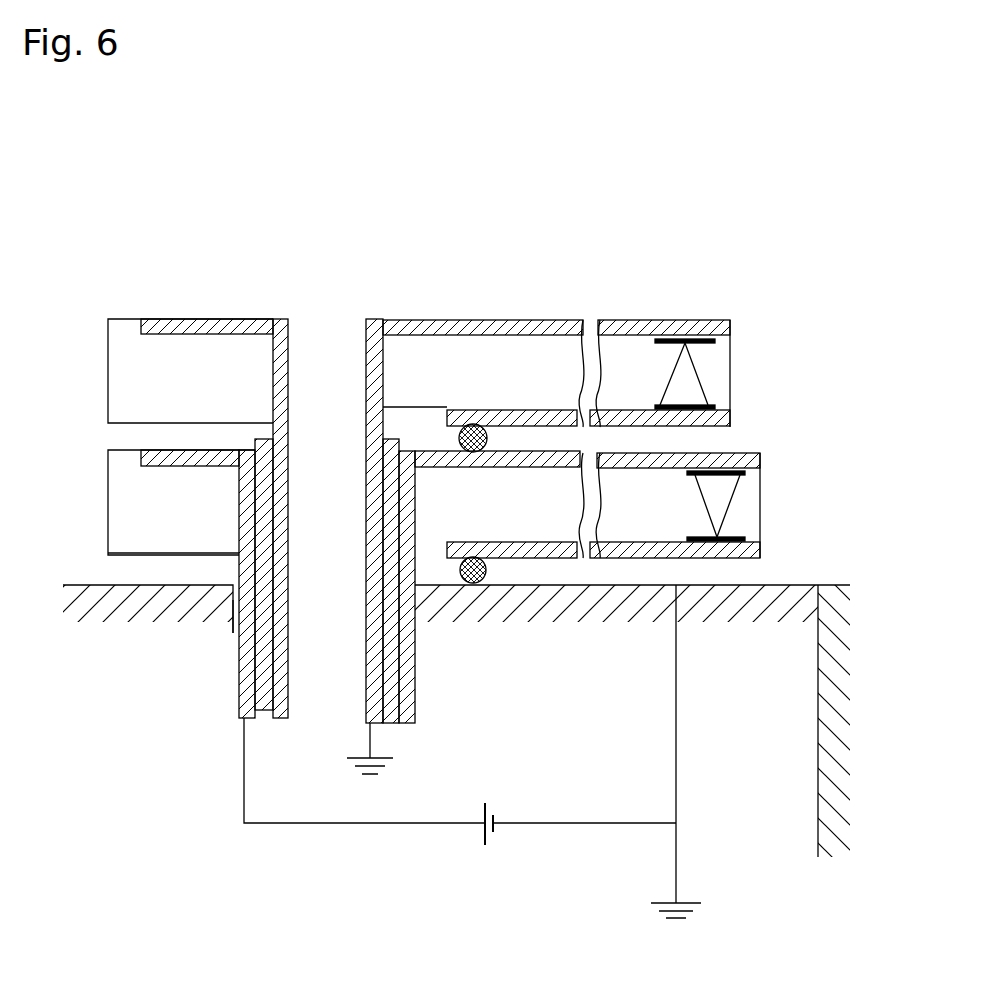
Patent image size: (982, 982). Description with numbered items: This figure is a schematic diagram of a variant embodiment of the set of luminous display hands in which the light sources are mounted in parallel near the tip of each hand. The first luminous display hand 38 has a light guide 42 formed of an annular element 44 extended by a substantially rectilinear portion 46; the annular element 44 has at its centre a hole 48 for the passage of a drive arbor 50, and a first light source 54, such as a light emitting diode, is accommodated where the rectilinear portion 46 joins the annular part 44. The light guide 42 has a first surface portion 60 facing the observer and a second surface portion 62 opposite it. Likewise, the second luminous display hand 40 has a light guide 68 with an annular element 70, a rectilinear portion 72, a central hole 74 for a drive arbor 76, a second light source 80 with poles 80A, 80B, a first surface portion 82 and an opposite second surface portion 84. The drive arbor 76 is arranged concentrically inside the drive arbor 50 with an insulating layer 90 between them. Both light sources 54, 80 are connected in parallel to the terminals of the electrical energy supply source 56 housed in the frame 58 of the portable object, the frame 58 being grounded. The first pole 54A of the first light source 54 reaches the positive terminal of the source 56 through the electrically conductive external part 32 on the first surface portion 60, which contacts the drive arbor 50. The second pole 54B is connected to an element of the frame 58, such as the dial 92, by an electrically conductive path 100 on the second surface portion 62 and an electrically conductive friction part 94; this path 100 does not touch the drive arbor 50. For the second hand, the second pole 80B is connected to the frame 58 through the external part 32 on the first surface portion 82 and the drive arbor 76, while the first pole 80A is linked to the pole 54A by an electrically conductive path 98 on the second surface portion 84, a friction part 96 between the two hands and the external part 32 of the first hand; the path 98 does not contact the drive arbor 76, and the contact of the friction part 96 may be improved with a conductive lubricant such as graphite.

The electrically conductive external part 32 is at (731, 320).
The first luminous display hand 38 is at (657, 508).
The second luminous display hand 40 is at (527, 385).
The light guide 42 is at (100, 511).
The annular element 44 is at (120, 556).
The rectilinear portion 46 is at (702, 558).
The hole 48 is at (243, 633).
The drive arbor 50 is at (245, 688).
The first light source 54 is at (713, 500).
The first pole 54A is at (744, 474).
The second pole 54B is at (692, 541).
The electrical energy supply source 56 is at (478, 830).
The frame 58 is at (833, 815).
The first surface portion 60 is at (537, 480).
The second surface portion 62 is at (735, 560).
The light guide 68 is at (100, 355).
The annular element 70 is at (122, 342).
The rectilinear portion 72 is at (720, 365).
The hole 74 is at (330, 393).
The drive arbor 76 is at (277, 712).
The second light source 80 is at (692, 366).
The first pole 80A is at (716, 405).
The second pole 80B is at (657, 340).
The first surface portion 82 is at (462, 338).
The second surface portion 84 is at (707, 429).
The insulating layer 90 is at (237, 705).
The dial 92 is at (72, 590).
The electrically conductive friction part 94 is at (462, 583).
The electrically conductive friction part 96 is at (458, 435).
The electrically conductive path 98 is at (457, 410).
The electrically conductive path 100 is at (505, 558).